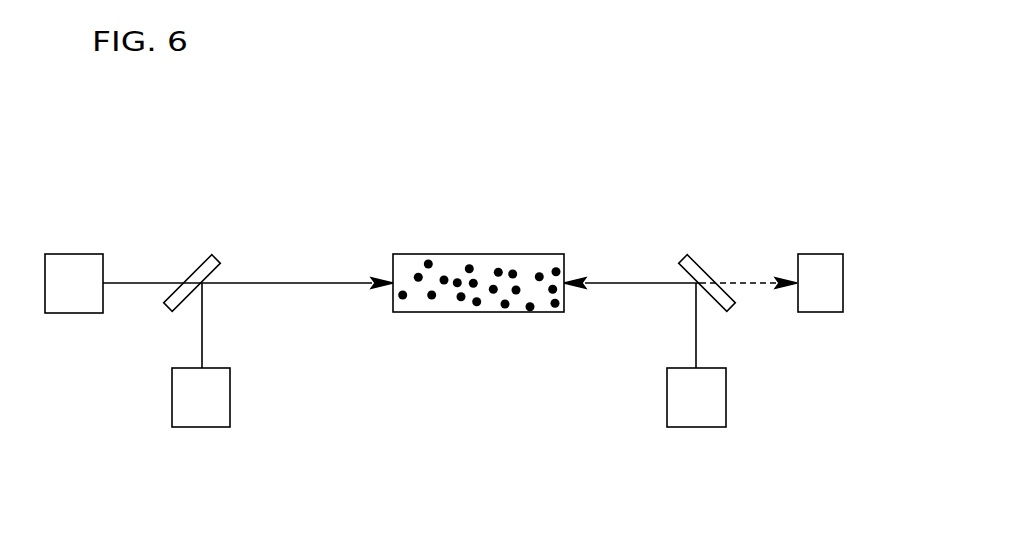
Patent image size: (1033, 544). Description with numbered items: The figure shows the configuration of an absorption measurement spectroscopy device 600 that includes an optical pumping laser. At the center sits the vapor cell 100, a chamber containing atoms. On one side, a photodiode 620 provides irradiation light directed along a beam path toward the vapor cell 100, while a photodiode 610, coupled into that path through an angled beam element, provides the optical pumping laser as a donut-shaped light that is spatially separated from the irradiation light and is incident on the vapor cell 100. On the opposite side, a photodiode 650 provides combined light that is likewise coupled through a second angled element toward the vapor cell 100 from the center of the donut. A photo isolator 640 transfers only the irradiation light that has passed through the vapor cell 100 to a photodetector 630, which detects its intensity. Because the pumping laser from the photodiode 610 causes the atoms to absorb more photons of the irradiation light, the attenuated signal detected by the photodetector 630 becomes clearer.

The absorption measurement spectroscopy device 600 is at (348, 154).
The photodiode 620 is at (73, 254).
The photodiode 610 is at (199, 427).
The vapor cell 100 is at (480, 312).
The photo isolator 640 is at (698, 266).
The photodetector 630 is at (820, 254).
The photodiode 650 is at (695, 427).